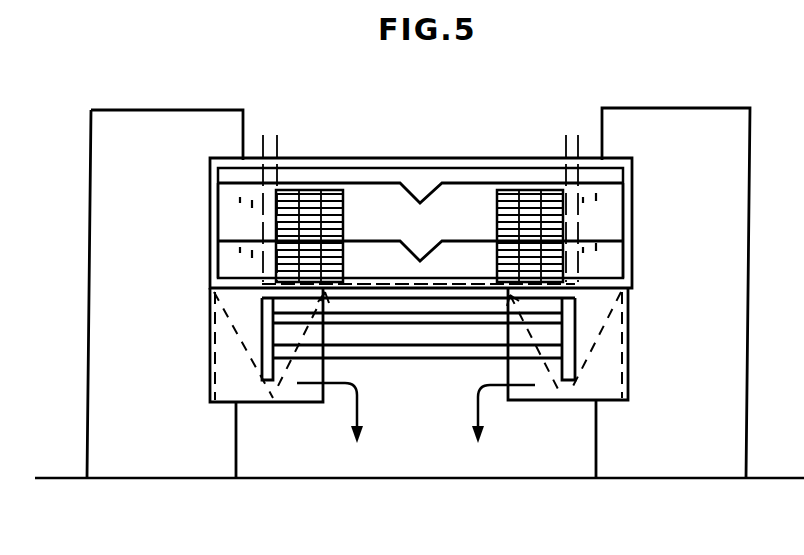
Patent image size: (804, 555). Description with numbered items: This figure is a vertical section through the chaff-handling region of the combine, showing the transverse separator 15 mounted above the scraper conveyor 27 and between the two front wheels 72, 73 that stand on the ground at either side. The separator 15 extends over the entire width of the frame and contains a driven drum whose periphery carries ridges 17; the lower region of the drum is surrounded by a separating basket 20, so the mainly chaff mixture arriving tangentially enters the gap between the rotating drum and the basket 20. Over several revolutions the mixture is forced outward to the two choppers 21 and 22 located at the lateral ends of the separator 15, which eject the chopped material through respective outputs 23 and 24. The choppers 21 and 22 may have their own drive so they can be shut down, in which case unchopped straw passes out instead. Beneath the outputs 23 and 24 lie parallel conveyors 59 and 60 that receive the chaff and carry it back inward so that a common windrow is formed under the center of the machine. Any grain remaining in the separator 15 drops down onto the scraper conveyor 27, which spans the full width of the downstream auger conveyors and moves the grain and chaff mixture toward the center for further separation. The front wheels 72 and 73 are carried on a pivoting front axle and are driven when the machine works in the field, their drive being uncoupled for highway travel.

The separator 15 is at (440, 158).
The peripheral ridges 17 is at (375, 183).
The separating basket 20 is at (531, 182).
The chopper 21 is at (603, 195).
The chopper 22 is at (237, 193).
The output 23 is at (542, 400).
The output 24 is at (257, 404).
The scraper conveyor 27 is at (408, 348).
The conveyor 59 is at (596, 340).
The conveyor 60 is at (240, 353).
The front wheel 72 is at (680, 450).
The front wheel 73 is at (145, 460).